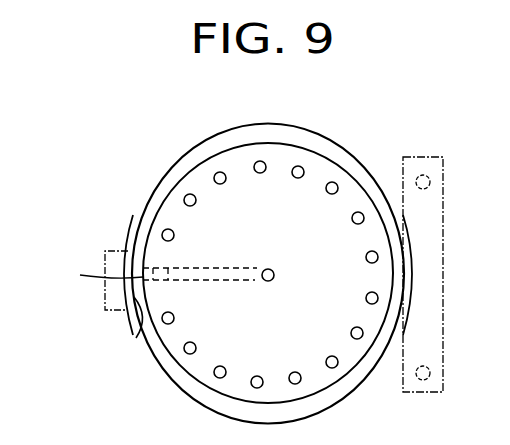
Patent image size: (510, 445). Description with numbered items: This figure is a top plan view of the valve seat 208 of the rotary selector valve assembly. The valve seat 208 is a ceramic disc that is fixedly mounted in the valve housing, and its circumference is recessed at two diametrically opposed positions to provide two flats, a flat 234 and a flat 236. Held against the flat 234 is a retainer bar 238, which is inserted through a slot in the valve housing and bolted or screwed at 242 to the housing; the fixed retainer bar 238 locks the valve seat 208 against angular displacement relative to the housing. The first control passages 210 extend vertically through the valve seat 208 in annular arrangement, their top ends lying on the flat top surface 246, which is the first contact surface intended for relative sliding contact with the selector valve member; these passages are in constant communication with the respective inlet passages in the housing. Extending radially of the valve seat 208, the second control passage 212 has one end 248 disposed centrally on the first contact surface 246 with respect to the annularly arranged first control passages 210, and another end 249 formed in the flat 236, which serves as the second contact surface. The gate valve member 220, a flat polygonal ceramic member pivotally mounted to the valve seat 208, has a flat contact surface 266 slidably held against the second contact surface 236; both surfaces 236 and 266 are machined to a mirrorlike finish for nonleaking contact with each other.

The valve seat 208 is at (192, 147).
The first control passages 210 is at (326, 189).
The second control passage 212 is at (204, 281).
The gate valve member 220 is at (107, 311).
The flat surface 234 is at (405, 313).
The flat surface 236 is at (131, 238).
The retainer bar 238 is at (432, 267).
The bolt or screw 242 is at (424, 176).
The flat top surface 246 is at (200, 363).
The end of second control passage 248 is at (274, 276).
The end of second control passage 249 is at (90, 274).
The flat contact surface 266 is at (139, 332).